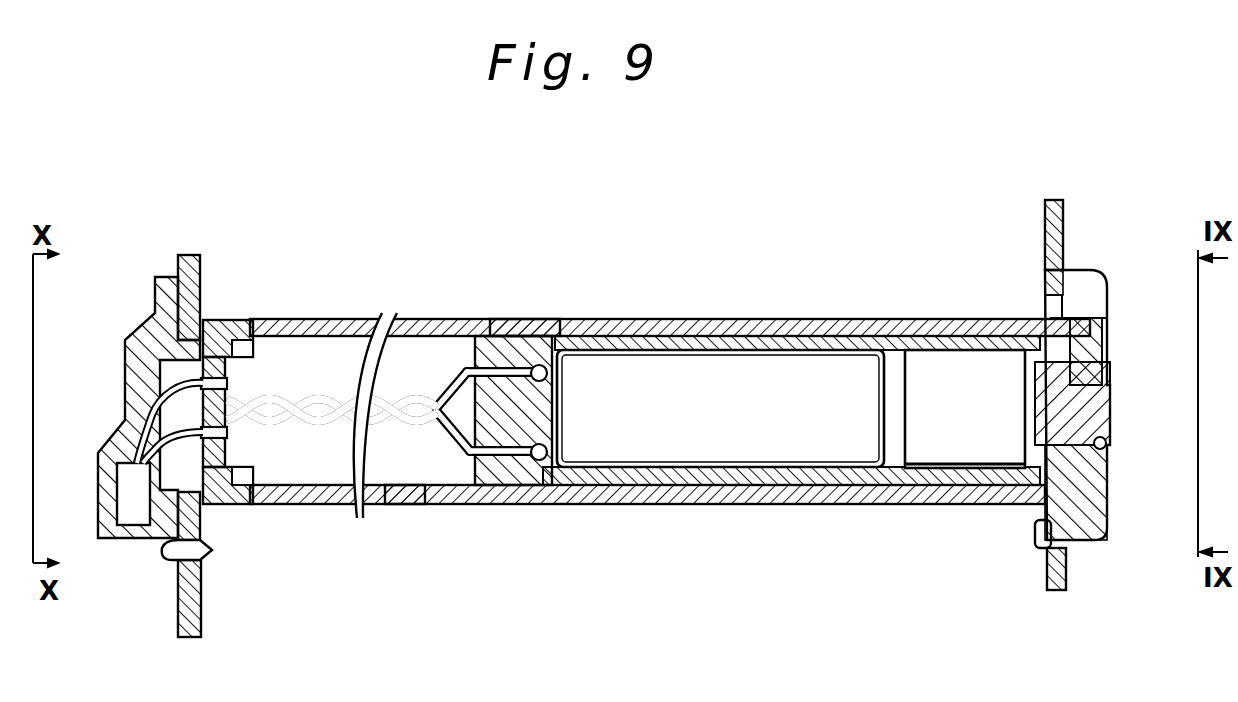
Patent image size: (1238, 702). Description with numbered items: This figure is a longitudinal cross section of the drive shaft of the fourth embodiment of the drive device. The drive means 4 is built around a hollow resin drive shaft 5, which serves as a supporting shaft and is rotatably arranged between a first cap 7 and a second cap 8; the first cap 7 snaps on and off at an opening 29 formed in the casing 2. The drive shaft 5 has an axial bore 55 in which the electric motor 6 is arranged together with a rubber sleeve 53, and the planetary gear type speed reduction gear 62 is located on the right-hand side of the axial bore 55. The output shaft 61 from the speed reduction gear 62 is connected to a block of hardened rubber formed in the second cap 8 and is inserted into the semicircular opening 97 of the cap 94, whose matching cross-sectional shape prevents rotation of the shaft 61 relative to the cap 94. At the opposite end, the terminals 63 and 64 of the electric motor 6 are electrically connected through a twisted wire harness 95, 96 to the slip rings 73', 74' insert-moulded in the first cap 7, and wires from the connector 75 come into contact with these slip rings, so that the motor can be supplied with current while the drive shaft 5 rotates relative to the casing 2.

The casing 2 is at (178, 260).
The drive means 4 is at (231, 230).
The drive shaft 5 is at (643, 505).
The electric motor 6 is at (780, 435).
The first cap 7 is at (140, 323).
The second cap 8 is at (1108, 500).
The opening 29 is at (170, 522).
The sleeve 53 is at (523, 505).
The axial bore 55 is at (411, 488).
The output shaft 61 is at (1097, 410).
The speed reduction gear 62 is at (953, 447).
The terminal 63 is at (568, 505).
The terminal 64 is at (528, 322).
The slip ring 73' is at (168, 363).
The slip ring 74' is at (174, 477).
The connector 75 is at (125, 504).
The cap 94 is at (1100, 352).
The twisted wire harness 95 is at (320, 425).
The twisted wire harness 96 is at (345, 430).
The semicircular opening 97 is at (1103, 443).